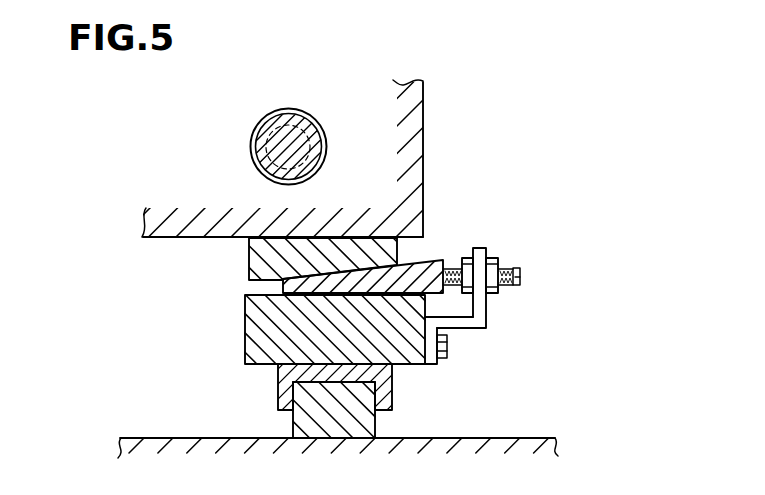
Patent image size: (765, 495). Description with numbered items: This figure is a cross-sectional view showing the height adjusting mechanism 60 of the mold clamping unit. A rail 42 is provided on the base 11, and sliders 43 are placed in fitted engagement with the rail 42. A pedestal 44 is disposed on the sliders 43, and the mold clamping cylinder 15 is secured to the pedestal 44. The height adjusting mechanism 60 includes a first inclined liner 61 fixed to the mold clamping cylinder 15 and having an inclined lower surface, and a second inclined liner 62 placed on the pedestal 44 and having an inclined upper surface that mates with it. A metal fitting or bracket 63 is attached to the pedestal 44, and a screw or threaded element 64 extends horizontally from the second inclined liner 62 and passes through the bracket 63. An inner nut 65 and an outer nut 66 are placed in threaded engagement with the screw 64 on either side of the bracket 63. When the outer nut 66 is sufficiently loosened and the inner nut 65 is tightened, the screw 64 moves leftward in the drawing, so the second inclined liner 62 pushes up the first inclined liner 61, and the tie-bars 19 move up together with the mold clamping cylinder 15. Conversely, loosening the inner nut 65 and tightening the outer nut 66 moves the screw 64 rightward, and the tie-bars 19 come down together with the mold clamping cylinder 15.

The base 11 is at (558, 449).
The mold clamping cylinder 15 is at (413, 118).
The tie-bar 19 is at (262, 126).
The rail 42 is at (310, 420).
The slider 43 is at (282, 379).
The pedestal 44 is at (257, 318).
The height adjusting mechanism 60 is at (461, 271).
The first inclined liner 61 is at (258, 257).
The second inclined liner 62 is at (423, 267).
The metal fitting or bracket 63 is at (480, 320).
The screw or threaded element 64 is at (513, 268).
The inner nut 65 is at (466, 258).
The outer nut 66 is at (492, 258).